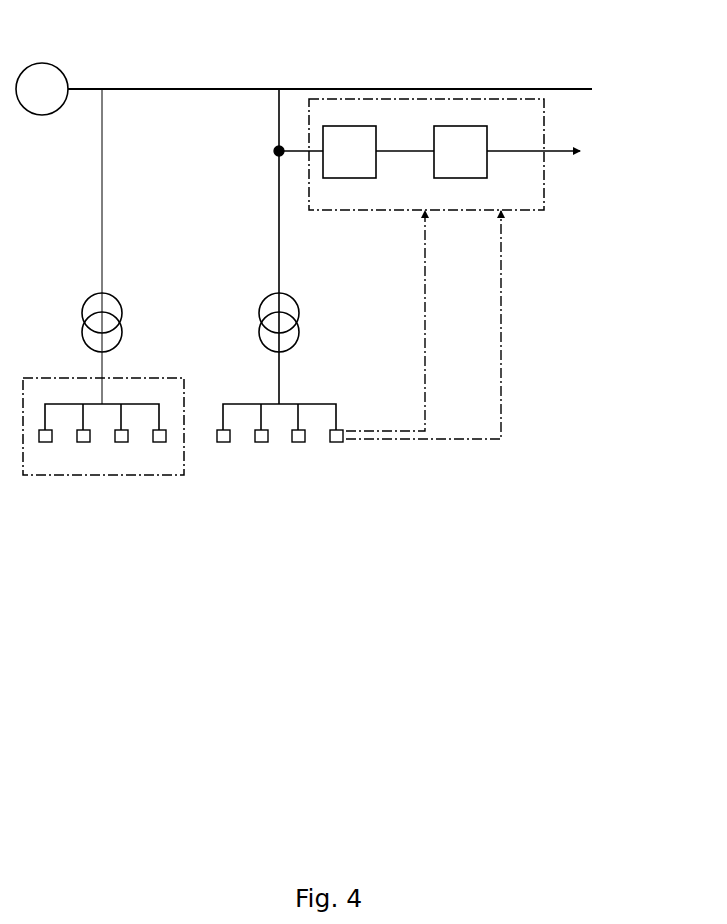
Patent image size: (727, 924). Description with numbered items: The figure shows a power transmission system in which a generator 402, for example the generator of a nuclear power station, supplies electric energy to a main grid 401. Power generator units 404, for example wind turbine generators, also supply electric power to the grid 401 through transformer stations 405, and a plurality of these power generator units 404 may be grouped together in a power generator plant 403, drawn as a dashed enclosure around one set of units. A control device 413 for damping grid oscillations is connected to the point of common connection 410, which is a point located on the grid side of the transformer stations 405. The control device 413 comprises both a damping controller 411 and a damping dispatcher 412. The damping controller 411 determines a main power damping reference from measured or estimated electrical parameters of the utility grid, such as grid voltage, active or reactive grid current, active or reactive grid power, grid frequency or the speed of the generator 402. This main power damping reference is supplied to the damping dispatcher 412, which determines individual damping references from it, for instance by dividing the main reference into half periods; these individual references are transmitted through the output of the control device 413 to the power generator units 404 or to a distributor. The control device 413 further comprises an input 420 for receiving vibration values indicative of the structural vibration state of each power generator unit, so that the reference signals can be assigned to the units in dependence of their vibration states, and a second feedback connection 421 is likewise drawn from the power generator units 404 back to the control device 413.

The main grid 401 is at (167, 83).
The generator 402 is at (46, 63).
The power generator plant 403 is at (75, 480).
The power generator units 404 is at (121, 445).
The transformer stations 405 is at (122, 298).
The point of common connection 410 is at (273, 154).
The damping controller 411 is at (336, 180).
The damping dispatcher 412 is at (478, 180).
The control device 413 is at (355, 213).
The input 420 is at (428, 215).
The control signal line 421 is at (504, 215).